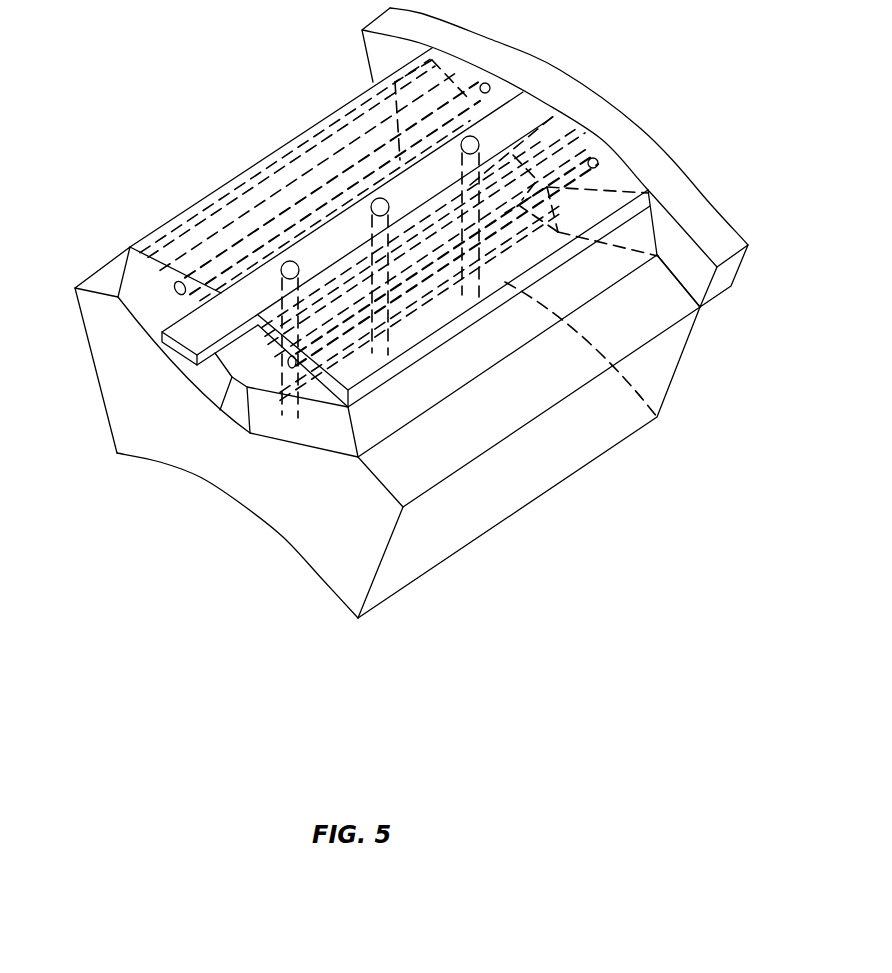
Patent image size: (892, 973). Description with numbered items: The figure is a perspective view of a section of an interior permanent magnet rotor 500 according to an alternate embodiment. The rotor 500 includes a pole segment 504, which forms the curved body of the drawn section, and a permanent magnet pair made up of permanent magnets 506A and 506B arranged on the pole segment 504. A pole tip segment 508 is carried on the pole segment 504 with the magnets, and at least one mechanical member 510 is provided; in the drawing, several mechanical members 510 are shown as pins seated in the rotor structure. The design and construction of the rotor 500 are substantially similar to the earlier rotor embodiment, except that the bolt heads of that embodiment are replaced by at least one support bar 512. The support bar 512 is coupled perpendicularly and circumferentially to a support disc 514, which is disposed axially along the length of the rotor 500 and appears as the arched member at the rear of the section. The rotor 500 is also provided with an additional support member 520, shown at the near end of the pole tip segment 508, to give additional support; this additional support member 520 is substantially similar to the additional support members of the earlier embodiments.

The IPM rotor 500 is at (655, 703).
The pole segment 504 is at (117, 415).
The permanent magnet 506A is at (121, 297).
The permanent magnet 506B is at (412, 403).
The pole tip segment 508 is at (222, 187).
The mechanical member 510 is at (480, 142).
The support bar 512 is at (512, 108).
The support disc 514 is at (672, 173).
The additional support member 520 is at (177, 280).